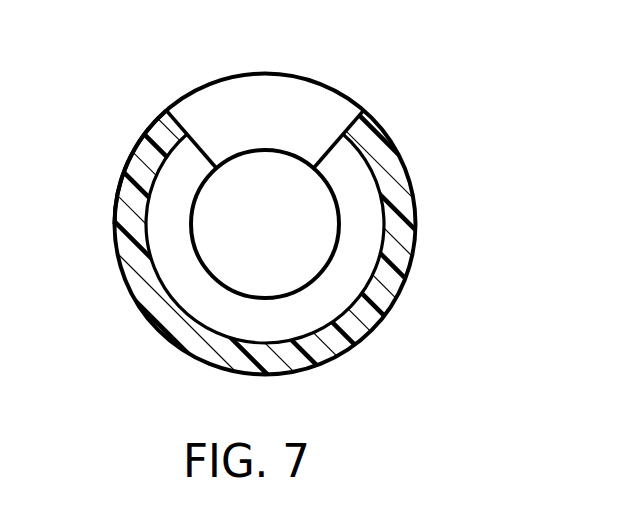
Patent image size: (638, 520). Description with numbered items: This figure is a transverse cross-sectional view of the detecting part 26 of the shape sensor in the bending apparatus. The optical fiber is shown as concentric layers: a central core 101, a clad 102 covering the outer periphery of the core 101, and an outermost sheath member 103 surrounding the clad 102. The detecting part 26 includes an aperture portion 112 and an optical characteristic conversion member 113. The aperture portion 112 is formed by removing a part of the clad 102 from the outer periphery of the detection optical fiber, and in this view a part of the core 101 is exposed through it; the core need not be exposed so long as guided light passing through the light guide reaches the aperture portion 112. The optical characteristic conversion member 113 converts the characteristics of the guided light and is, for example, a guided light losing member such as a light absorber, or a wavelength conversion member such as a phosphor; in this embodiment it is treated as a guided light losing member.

The detecting part 26 is at (368, 89).
The core 101 is at (325, 223).
The clad 102 is at (158, 193).
The sheath member 103 is at (128, 268).
The aperture portion 112 is at (285, 112).
The optical characteristic conversion member 113 is at (180, 89).